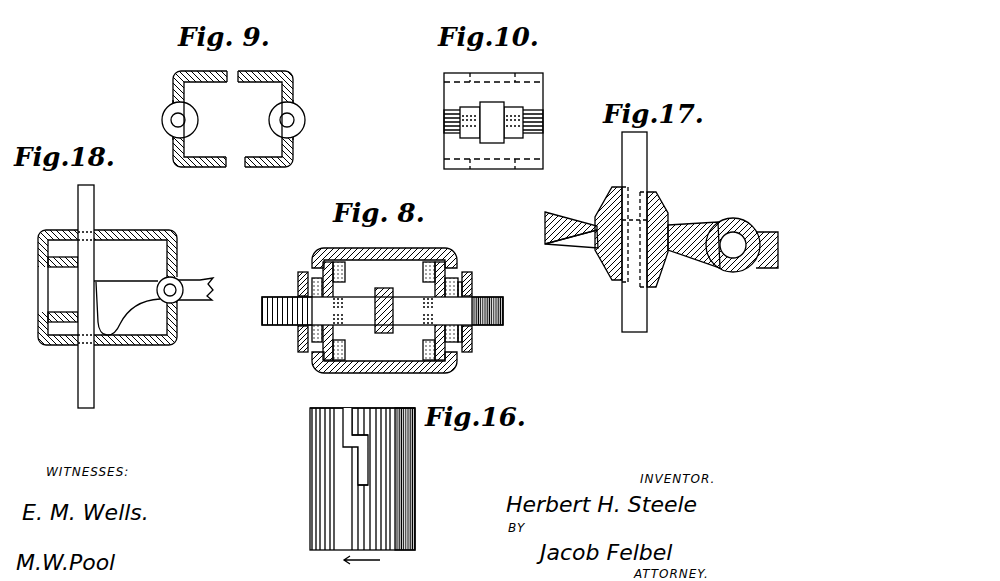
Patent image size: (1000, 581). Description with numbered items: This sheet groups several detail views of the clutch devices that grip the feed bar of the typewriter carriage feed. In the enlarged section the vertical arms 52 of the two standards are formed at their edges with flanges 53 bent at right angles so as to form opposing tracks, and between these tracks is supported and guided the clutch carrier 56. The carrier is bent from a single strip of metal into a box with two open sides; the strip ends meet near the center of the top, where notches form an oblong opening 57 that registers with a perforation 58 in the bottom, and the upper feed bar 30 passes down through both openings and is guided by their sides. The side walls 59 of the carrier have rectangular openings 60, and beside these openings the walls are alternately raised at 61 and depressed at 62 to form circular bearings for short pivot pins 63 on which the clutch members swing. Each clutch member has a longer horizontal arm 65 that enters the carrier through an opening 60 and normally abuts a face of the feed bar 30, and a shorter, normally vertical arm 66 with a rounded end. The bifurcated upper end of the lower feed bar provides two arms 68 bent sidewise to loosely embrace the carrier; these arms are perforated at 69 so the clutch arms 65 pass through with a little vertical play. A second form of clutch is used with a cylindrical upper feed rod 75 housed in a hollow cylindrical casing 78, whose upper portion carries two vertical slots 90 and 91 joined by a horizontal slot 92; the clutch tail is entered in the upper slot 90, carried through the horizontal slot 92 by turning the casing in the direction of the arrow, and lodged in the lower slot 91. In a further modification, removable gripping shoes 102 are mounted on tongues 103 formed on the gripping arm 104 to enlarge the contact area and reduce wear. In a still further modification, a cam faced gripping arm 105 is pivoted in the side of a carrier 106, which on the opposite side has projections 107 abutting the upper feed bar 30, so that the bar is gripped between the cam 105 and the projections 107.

In FIG. 18, the upper feed bar 30 is at (90, 212).
In FIG. 8, the upper feed bar 30 is at (384, 334).
In FIG. 8, the vertical arm 52 is at (432, 248).
In FIG. 8, the flange 53 is at (445, 268).
In FIG. 9, the clutch carrier 56 is at (293, 96).
In FIG. 10, the clutch carrier 56 is at (543, 95).
In FIG. 9, the oblong opening 57 is at (232, 83).
In FIG. 10, the oblong opening 57 is at (500, 73).
In FIG. 9, the perforation 58 is at (235, 168).
In FIG. 10, the perforation 58 is at (488, 169).
In FIG. 9, the side wall 59 is at (173, 90).
In FIG. 10, the side wall 59 is at (444, 90).
In FIG. 10, the rectangular opening 60 is at (492, 122).
In FIG. 9, the raised portion 61 is at (295, 120).
In FIG. 10, the raised portion 61 is at (470, 107).
In FIG. 8, the raised portion 61 is at (458, 345).
In FIG. 9, the depressed portion 62 is at (186, 120).
In FIG. 10, the depressed portion 62 is at (444, 118).
In FIG. 8, the depressed portion 62 is at (345, 272).
In FIG. 8, the pivot pin 63 is at (312, 270).
In FIG. 8, the horizontal arm 65 is at (384, 311).
In FIG. 8, the shorter arm 66 is at (517, 294).
In FIG. 8, the bifurcated arm 68 is at (298, 348).
In FIG. 8, the perforation 69 is at (472, 290).
In FIG. 17, the upper feed rod 75 is at (647, 159).
In FIG. 16, the cylindrical casing 78 is at (345, 438).
In FIG. 16, the upper vertical slot 90 is at (350, 410).
In FIG. 16, the lower vertical slot 91 is at (358, 483).
In FIG. 16, the horizontal slot 92 is at (352, 448).
In FIG. 17, the gripping shoe 102 is at (604, 195).
In FIG. 17, the tongue 103 is at (585, 245).
In FIG. 17, the gripping arm 104 is at (695, 258).
In FIG. 18, the cam faced gripping arm 105 is at (111, 283).
In FIG. 18, the carrier 106 is at (137, 345).
In FIG. 18, the projection 107 is at (62, 310).